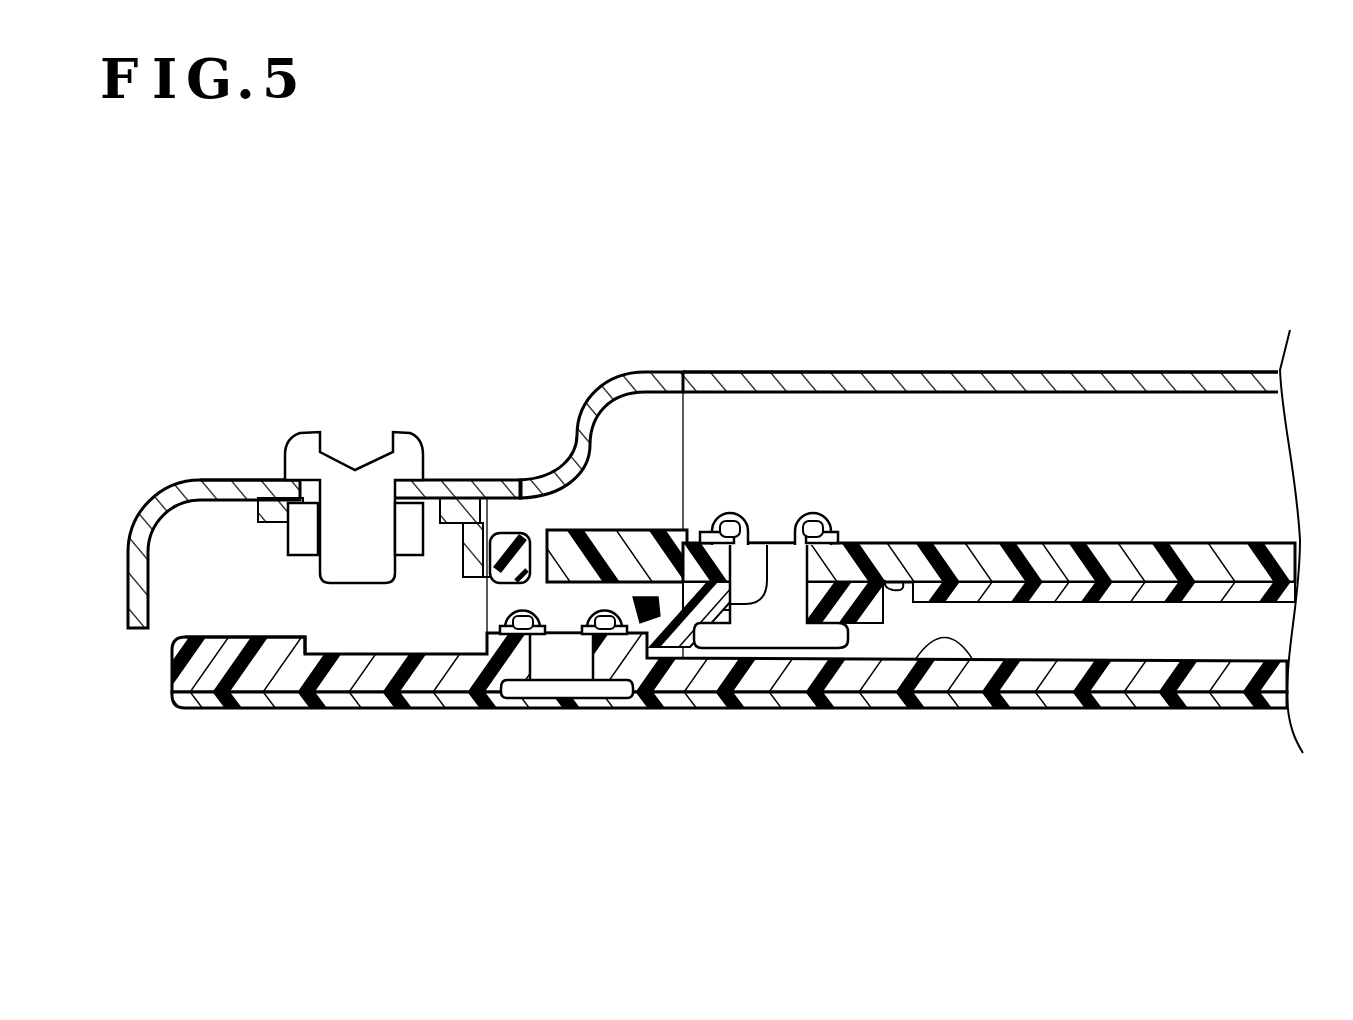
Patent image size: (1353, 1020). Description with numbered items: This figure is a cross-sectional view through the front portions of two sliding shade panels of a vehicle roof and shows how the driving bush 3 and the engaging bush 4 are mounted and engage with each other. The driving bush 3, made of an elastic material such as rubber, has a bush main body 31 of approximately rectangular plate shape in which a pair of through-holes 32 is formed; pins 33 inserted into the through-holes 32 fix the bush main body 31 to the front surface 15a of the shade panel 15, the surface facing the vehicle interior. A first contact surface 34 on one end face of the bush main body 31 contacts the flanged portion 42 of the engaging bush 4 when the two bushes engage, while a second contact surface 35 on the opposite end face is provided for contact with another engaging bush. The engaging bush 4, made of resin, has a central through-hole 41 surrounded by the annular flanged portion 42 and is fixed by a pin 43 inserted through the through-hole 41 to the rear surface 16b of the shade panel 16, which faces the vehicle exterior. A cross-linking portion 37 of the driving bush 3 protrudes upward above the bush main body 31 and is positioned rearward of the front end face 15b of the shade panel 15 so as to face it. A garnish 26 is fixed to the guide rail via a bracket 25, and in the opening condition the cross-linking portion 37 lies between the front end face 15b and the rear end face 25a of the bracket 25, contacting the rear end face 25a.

The driving bush 3 is at (863, 632).
The engaging bush 4 is at (633, 660).
The shade panel 15 is at (1060, 543).
The front surface 15a is at (903, 583).
The front end face 15b is at (490, 563).
The shade panel 16 is at (1167, 712).
The rear surface 16b is at (977, 660).
The bracket 25 is at (278, 503).
The rear end face 25a is at (432, 660).
The garnish 26 is at (180, 482).
The bush main body 31 is at (878, 587).
The through-holes 32 is at (767, 550).
The pins 33 is at (783, 607).
The first contact surface 34 is at (540, 525).
The second contact surface 35 is at (888, 604).
The cross-linking portion 37 is at (487, 500).
The through-hole 41 is at (557, 707).
The flanged portion 42 is at (650, 607).
The pin 43 is at (577, 672).